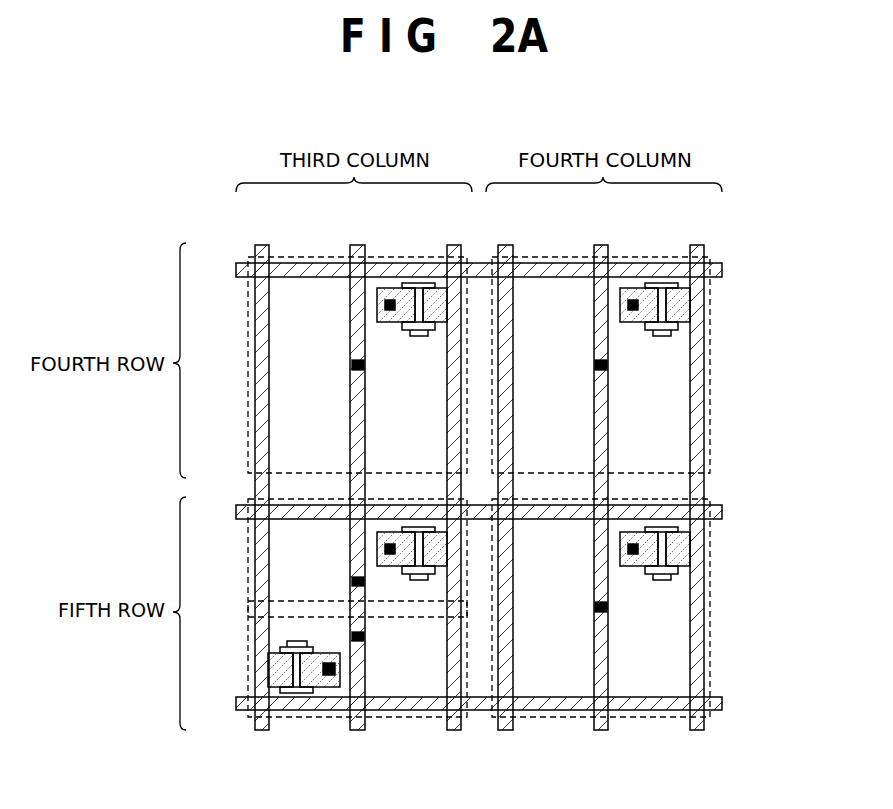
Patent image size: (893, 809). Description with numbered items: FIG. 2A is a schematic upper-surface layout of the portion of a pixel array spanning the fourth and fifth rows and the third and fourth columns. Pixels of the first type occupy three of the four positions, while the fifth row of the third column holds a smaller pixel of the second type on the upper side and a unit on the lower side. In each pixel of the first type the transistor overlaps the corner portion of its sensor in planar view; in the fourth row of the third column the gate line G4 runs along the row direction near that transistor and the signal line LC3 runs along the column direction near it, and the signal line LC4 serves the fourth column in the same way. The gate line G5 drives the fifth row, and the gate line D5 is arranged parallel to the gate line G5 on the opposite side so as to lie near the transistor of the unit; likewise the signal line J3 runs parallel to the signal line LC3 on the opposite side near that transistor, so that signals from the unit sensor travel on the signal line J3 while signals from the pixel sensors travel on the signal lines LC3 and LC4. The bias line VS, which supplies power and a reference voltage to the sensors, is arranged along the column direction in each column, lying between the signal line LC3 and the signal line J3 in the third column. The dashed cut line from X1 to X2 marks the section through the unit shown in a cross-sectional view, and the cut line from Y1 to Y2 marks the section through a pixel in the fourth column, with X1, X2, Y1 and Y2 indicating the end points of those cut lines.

The gate line G4 is at (722, 270).
The gate line G5 is at (722, 512).
The gate line D5 is at (722, 704).
The bias line VS is at (357, 245).
The cut line end point X1 is at (330, 669).
The cut line end point X2 is at (328, 663).
The cut line end point Y1 is at (600, 365).
The cut line end point Y2 is at (603, 305).
The signal line J3 is at (262, 731).
The signal line LC3 is at (454, 731).
The signal line LC4 is at (697, 731).